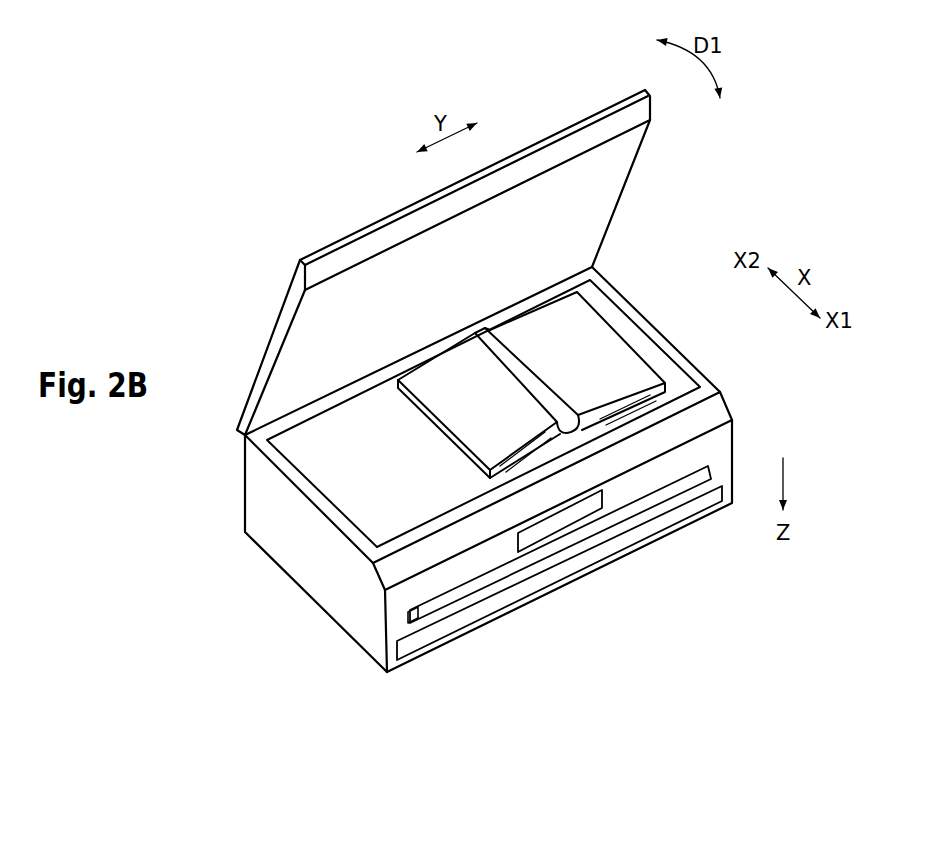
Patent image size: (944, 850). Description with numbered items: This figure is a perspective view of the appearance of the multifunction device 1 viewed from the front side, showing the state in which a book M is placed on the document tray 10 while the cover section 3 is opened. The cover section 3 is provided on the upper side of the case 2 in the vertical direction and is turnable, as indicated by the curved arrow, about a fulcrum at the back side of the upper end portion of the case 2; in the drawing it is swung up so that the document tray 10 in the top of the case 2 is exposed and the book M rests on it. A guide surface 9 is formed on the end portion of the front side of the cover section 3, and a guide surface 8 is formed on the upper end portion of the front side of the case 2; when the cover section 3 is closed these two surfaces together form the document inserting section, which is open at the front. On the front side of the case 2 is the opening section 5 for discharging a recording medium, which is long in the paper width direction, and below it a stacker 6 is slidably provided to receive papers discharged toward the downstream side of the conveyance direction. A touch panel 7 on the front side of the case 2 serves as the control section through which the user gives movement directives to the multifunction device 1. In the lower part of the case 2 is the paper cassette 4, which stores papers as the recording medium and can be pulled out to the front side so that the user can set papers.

The multifunction device 1 is at (244, 228).
The case 2 is at (255, 490).
The cover section 3 is at (275, 338).
The paper cassette 4 is at (434, 636).
The opening section for discharging a recording medium 5 is at (415, 616).
The stacker 6 is at (505, 587).
The touch panel 7 is at (560, 525).
The guide surface 8 is at (715, 410).
The guide surface 9 is at (642, 113).
The document tray 10 is at (617, 323).
The book M is at (633, 368).